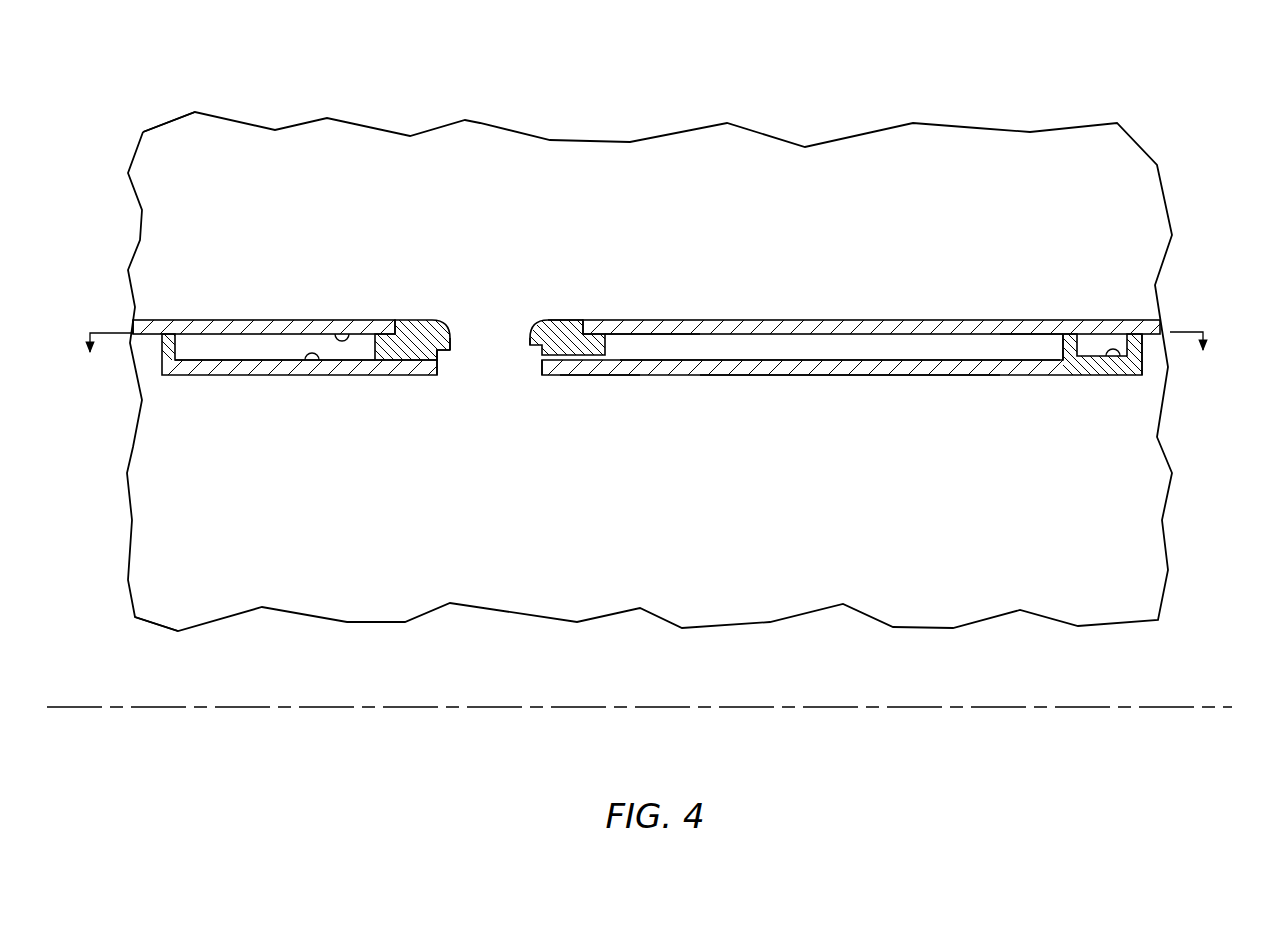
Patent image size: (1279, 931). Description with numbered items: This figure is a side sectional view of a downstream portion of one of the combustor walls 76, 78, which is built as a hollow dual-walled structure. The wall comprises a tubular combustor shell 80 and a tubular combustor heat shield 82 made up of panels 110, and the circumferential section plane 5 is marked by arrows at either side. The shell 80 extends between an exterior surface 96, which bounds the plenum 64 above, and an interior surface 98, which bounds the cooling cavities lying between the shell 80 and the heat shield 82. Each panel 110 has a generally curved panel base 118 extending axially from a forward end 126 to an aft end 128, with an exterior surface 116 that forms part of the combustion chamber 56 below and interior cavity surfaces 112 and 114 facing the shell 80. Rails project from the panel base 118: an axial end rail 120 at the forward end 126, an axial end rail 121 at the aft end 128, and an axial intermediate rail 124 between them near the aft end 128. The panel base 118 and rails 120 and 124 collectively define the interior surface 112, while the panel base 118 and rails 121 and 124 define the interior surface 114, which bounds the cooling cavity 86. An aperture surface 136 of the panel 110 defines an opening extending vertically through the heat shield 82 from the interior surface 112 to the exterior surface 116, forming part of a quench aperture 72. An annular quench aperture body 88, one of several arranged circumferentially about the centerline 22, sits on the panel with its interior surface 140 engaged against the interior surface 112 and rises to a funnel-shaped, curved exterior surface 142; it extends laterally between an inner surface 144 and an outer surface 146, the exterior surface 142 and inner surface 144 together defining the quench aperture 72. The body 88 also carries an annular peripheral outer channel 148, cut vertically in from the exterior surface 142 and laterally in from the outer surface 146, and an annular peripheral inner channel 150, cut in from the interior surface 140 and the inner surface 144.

The combustor wall 76 is at (690, 343).
The combustor wall 78 is at (1166, 134).
The plenum 64 is at (735, 171).
The combustion chamber 56 is at (710, 611).
The exterior surface 96 is at (232, 336).
The interior surface 98 is at (346, 333).
The annular peripheral outer channel 148 is at (440, 331).
The annular peripheral inner channel 150 is at (452, 354).
The quench aperture 72 is at (493, 327).
The exterior surface 142 is at (575, 295).
The quench aperture body 88 is at (575, 316).
The outer surface 146 is at (608, 343).
The combustor shell 80 is at (871, 292).
The axial intermediate rail 124 is at (1050, 318).
The combustor heat shield 82 is at (878, 400).
The panel 110 is at (878, 400).
The panel base 118 is at (888, 369).
The interior surface 140 is at (580, 373).
The inner surface 144 is at (545, 359).
The axial aft end 128 is at (1139, 397).
The cooling cavity 86 is at (1070, 346).
The interior surface 114 is at (1113, 354).
The axial end rail 121 is at (1144, 346).
The exterior surface 116 is at (305, 392).
The axial forward end 126 is at (168, 352).
The interior surface 112 is at (312, 362).
The aperture surface 136 is at (430, 373).
The axial end rail 120 is at (135, 338).
The section line 5- 5 is at (648, 362).
The centerline 22 is at (1100, 718).